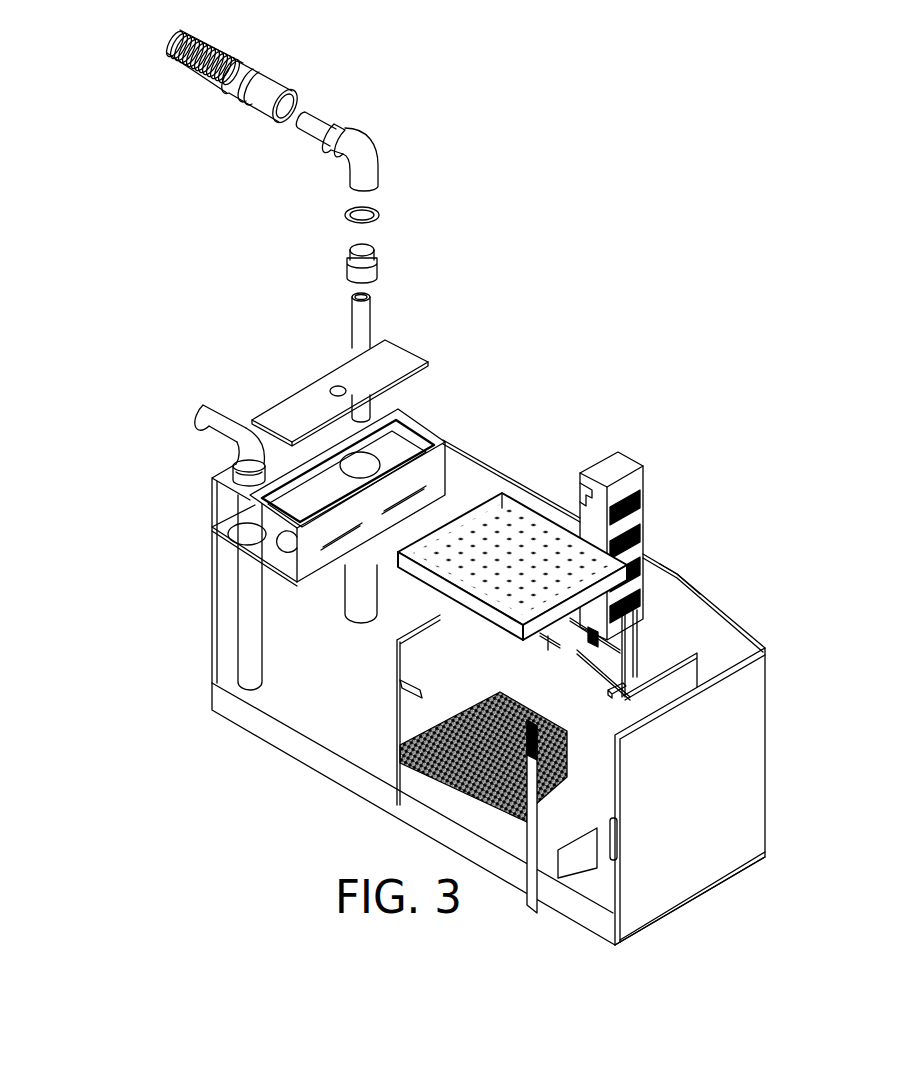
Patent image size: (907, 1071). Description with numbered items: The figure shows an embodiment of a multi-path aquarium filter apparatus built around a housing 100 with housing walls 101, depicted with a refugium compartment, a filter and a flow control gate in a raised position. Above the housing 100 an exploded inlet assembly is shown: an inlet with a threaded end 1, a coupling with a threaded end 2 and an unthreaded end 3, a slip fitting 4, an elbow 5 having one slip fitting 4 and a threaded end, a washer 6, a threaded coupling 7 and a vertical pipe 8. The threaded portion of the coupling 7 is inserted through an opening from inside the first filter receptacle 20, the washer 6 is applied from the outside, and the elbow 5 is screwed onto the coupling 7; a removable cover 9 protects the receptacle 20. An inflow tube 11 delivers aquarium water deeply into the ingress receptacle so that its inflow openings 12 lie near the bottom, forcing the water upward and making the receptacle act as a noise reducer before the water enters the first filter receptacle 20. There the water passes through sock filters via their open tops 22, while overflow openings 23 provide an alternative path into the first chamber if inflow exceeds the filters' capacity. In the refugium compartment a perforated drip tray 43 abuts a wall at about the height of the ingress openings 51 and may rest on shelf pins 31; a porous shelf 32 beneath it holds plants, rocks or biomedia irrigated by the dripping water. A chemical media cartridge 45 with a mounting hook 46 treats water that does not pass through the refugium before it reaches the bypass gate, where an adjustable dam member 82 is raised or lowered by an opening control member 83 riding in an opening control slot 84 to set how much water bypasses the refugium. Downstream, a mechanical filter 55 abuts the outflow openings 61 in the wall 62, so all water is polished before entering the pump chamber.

The threaded end 1 is at (185, 57).
The threaded end of coupling 2 is at (240, 78).
The unthreaded end of coupling 3 is at (275, 99).
The slip fitting 4 is at (317, 128).
The elbow 5 is at (370, 152).
The washer 6 is at (378, 215).
The threaded coupling 7 is at (382, 263).
The vertical pipe 8 is at (365, 322).
The removable cover 9 is at (405, 362).
The inflow tube 11 is at (247, 448).
The inflow openings 12 is at (355, 608).
The first filter receptacle 20 is at (398, 440).
The open tops 22 is at (287, 518).
The overflow openings 23 is at (400, 552).
The shelf pins 31 is at (402, 682).
The porous shelf 32 is at (415, 740).
The drip tray 43 is at (508, 537).
The chemical media cartridge 45 is at (620, 470).
The hook 46 is at (580, 497).
The ingress openings 51 is at (575, 651).
The mechanical filter 55 is at (540, 858).
The outflow openings 61 is at (600, 862).
The wall 62 is at (700, 672).
The adjustable dam member 82 is at (680, 583).
The opening control member 83 is at (645, 672).
The opening control slot 84 is at (637, 632).
The housing 100 is at (767, 787).
The housing walls 101 is at (727, 717).